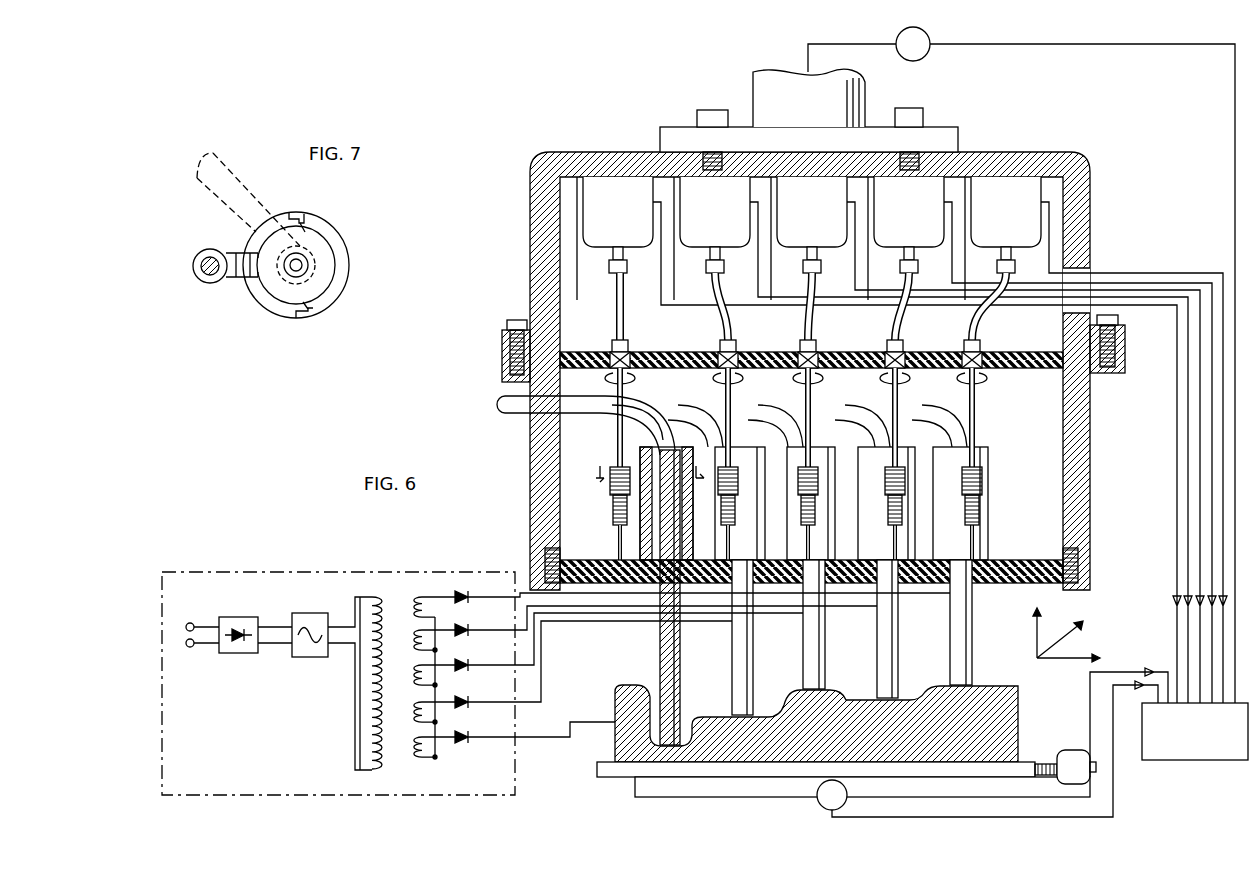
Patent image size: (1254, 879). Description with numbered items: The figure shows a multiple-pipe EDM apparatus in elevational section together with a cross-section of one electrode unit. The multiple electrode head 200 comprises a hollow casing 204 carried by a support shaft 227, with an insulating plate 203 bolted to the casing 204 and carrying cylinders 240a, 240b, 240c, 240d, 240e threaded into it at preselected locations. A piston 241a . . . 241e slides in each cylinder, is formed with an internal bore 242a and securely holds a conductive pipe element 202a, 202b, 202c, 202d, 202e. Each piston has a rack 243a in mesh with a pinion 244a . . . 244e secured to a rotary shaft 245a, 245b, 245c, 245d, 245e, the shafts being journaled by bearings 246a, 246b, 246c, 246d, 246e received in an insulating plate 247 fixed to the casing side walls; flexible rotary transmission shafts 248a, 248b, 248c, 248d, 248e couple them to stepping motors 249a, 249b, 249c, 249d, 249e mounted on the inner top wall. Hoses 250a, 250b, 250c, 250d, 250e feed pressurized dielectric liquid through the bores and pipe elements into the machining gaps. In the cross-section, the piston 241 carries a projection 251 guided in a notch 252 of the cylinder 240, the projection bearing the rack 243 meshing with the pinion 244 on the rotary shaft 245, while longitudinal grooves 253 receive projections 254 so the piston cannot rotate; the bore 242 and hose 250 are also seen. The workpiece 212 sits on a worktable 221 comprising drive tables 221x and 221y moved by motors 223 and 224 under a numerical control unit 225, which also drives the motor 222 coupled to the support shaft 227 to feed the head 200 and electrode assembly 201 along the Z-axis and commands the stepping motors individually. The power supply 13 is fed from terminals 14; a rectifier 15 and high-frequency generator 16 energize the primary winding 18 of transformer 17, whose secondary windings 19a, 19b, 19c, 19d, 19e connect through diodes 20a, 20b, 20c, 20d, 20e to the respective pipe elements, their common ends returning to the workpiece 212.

In FIG. 6, the AC-DC-HF-DC pulse system 13 is at (355, 570).
In FIG. 6, the output terminals 14 is at (186, 648).
In FIG. 6, the rectifier 15 is at (238, 653).
In FIG. 6, the high-frequency generator 16 is at (303, 657).
In FIG. 6, the high-frequency transformer 17 is at (394, 606).
In FIG. 6, the primary winding 18 is at (368, 600).
In FIG. 6, the secondary winding 19a is at (420, 600).
In FIG. 6, the secondary winding 19b is at (426, 632).
In FIG. 6, the secondary winding 19c is at (410, 683).
In FIG. 6, the secondary winding 19d is at (410, 718).
In FIG. 6, the secondary winding 19e is at (417, 760).
In FIG. 6, the diode 20a is at (460, 594).
In FIG. 6, the diode 20b is at (462, 636).
In FIG. 6, the diode 20c is at (460, 671).
In FIG. 6, the diode 20d is at (460, 708).
In FIG. 6, the diode 20e is at (472, 742).
In FIG. 6, the multiple electrode head 200 is at (859, 426).
In FIG. 6, the electrode assembly 201 is at (1051, 627).
In FIG. 6, the conductive pipe element 202a is at (660, 640).
In FIG. 6, the conductive pipe element 202b is at (733, 658).
In FIG. 6, the conductive pipe element 202c is at (804, 658).
In FIG. 6, the conductive pipe element 202d is at (878, 658).
In FIG. 6, the conductive pipe element 202e is at (951, 658).
In FIG. 6, the insulating plate 203 is at (545, 575).
In FIG. 6, the hollow casing 204 is at (531, 304).
In FIG. 6, the workpiece 212 is at (795, 765).
In FIG. 6, the worktable 221 is at (1030, 762).
In FIG. 6, the drive table 221x is at (612, 778).
In FIG. 6, the drive table 221y is at (728, 797).
In FIG. 6, the motor 222 is at (925, 60).
In FIG. 6, the motor 223 is at (1092, 775).
In FIG. 6, the motor 224 is at (850, 800).
In FIG. 6, the numerical control (NC) unit 225 is at (1200, 762).
In FIG. 6, the support shaft 227 is at (753, 88).
In FIG. 7, the cylinder 240 is at (350, 256).
In FIG. 6, the cylinder 240a is at (557, 421).
In FIG. 6, the cylinder 240b is at (760, 580).
In FIG. 6, the cylinder 240c is at (836, 580).
In FIG. 6, the cylinder 240d is at (915, 584).
In FIG. 6, the cylinder 240e is at (990, 520).
In FIG. 7, the piston 241 is at (335, 282).
In FIG. 6, the piston 241a is at (690, 580).
In FIG. 6, the piston 241e is at (990, 540).
In FIG. 7, the internal bore 242 is at (291, 280).
In FIG. 6, the internal bore 242a is at (635, 548).
In FIG. 7, the rack 243 is at (222, 283).
In FIG. 6, the rack 243a is at (630, 520).
In FIG. 7, the pinion 244 is at (193, 268).
In FIG. 6, the pinion 244a is at (620, 495).
In FIG. 6, the pinion 244e is at (984, 480).
In FIG. 7, the rotary shaft 245 is at (211, 258).
In FIG. 6, the rotary shaft 245a is at (616, 388).
In FIG. 6, the rotary shaft 245b is at (743, 380).
In FIG. 6, the rotary shaft 245c is at (823, 380).
In FIG. 6, the rotary shaft 245d is at (910, 380).
In FIG. 6, the rotary shaft 245e is at (988, 380).
In FIG. 6, the bearing 246a is at (611, 346).
In FIG. 6, the bearing 246b is at (719, 346).
In FIG. 6, the bearing 246c is at (886, 346).
In FIG. 6, the bearing 246d is at (963, 346).
In FIG. 6, the bearing 246e is at (1050, 353).
In FIG. 6, the insulating plate 247 is at (786, 352).
In FIG. 6, the flexible rotary transmission shaft 248a is at (615, 312).
In FIG. 6, the flexible rotary transmission shaft 248b is at (720, 316).
In FIG. 6, the flexible rotary transmission shaft 248c is at (804, 318).
In FIG. 6, the flexible rotary transmission shaft 248d is at (893, 316).
In FIG. 6, the flexible rotary transmission shaft 248e is at (975, 316).
In FIG. 6, the stepping motor 249a is at (612, 246).
In FIG. 6, the stepping motor 249b is at (712, 246).
In FIG. 6, the stepping motor 249c is at (804, 246).
In FIG. 6, the stepping motor 249d is at (900, 246).
In FIG. 6, the stepping motor 249e is at (996, 246).
In FIG. 7, the hose 250 is at (268, 178).
In FIG. 6, the hose 250a is at (648, 406).
In FIG. 6, the hose 250b is at (710, 430).
In FIG. 6, the hose 250c is at (785, 420).
In FIG. 6, the hose 250d is at (865, 422).
In FIG. 6, the hose 250e is at (970, 414).
In FIG. 7, the projection 251 is at (237, 285).
In FIG. 7, the notch 252 is at (254, 290).
In FIG. 7, the groove 253 is at (292, 238).
In FIG. 7, the projection 254 is at (318, 230).